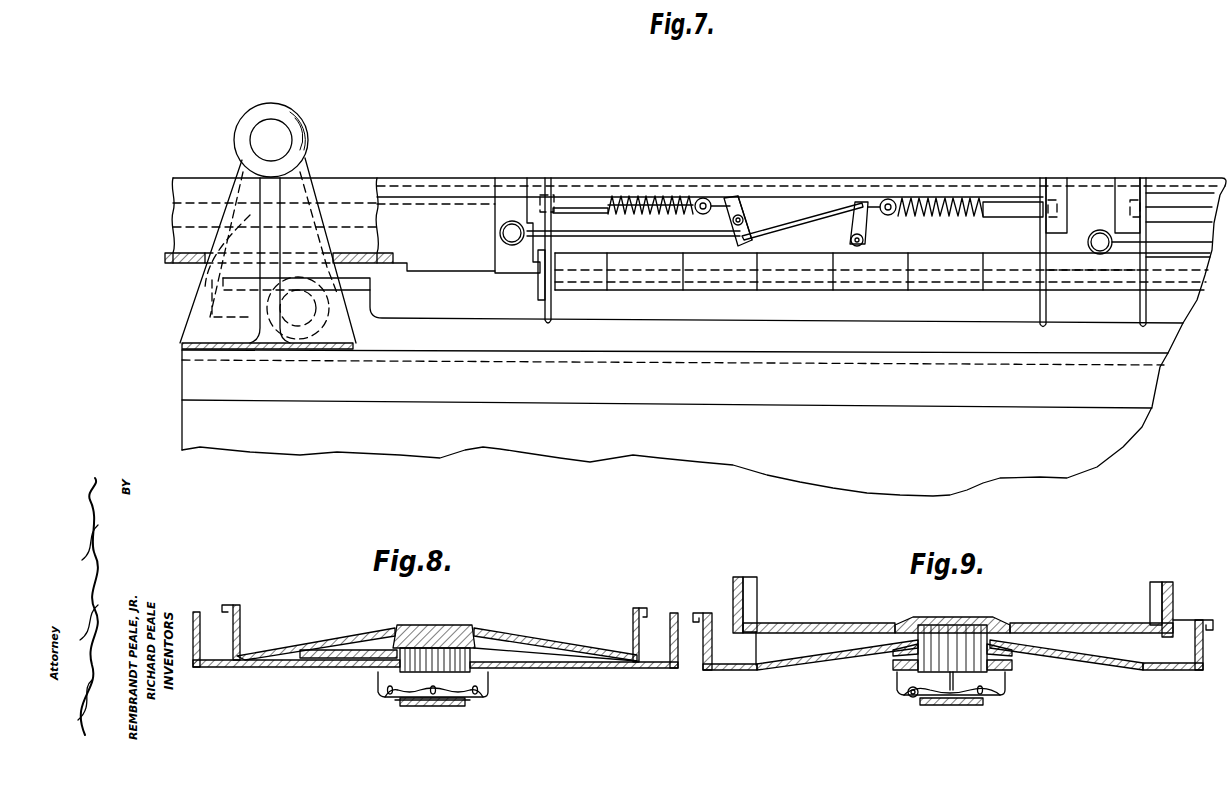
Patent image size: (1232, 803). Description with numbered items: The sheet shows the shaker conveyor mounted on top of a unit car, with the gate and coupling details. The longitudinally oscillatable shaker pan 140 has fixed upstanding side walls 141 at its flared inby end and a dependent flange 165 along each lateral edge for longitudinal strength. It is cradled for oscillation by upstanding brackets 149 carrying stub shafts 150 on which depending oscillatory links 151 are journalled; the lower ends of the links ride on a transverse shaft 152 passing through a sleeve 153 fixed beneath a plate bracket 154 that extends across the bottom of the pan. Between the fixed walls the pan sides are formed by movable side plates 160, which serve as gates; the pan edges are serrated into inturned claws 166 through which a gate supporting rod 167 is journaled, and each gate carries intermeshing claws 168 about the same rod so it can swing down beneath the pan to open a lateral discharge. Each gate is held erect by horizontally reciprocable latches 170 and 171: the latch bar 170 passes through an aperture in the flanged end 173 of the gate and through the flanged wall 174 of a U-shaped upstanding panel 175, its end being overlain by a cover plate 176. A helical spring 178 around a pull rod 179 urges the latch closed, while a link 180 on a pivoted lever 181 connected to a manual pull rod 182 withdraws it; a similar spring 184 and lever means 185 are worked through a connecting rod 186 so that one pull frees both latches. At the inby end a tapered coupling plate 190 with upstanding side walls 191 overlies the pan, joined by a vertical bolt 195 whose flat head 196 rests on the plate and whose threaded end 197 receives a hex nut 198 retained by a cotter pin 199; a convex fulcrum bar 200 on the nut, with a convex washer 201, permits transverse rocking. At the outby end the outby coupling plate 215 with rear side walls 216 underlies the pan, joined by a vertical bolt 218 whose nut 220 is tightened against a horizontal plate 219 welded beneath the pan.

In FIG. 7, the shaker pan 140 is at (353, 215).
In FIG. 8, the shaker pan 140 is at (350, 618).
In FIG. 9, the shaker pan 140 is at (1105, 666).
In FIG. 7, the upstanding side walls 141 is at (438, 197).
In FIG. 8, the upstanding side walls 141 is at (240, 620).
In FIG. 9, the upstanding side walls 141 is at (1205, 675).
In FIG. 7, the upstanding brackets 149 is at (240, 218).
In FIG. 7, the stub shafts 150 is at (265, 130).
In FIG. 7, the oscillatory links 151 is at (322, 215).
In FIG. 7, the transverse shaft 152 is at (215, 337).
In FIG. 7, the sleeve 153 is at (268, 310).
In FIG. 7, the plate bracket 154 is at (223, 289).
In FIG. 7, the movable side plates 160 is at (1175, 233).
In FIG. 7, the dependent flange 165 is at (445, 308).
In FIG. 7, the inturned claws 166 is at (565, 283).
In FIG. 7, the gate supporting rod 167 is at (1070, 284).
In FIG. 7, the intermeshing claws 168 is at (648, 281).
In FIG. 7, the latch bar 170 is at (582, 214).
In FIG. 7, the latch 171 is at (998, 212).
In FIG. 7, the flanged end 173 is at (557, 195).
In FIG. 7, the flanged wall 174 is at (548, 178).
In FIG. 7, the U-shaped upstanding panel 175 is at (508, 185).
In FIG. 7, the cover plate 176 is at (1050, 195).
In FIG. 7, the helical spring 178 is at (640, 200).
In FIG. 7, the pull rod 179 is at (704, 200).
In FIG. 7, the link 180 is at (728, 200).
In FIG. 7, the pivoted lever 181 is at (740, 204).
In FIG. 7, the manual pull rod 182 is at (642, 214).
In FIG. 7, the spring 184 is at (933, 200).
In FIG. 7, the lever means 185 is at (868, 222).
In FIG. 7, the connecting rod 186 is at (798, 222).
In FIG. 9, the coupling plate 190 is at (1075, 605).
In FIG. 9, the upstanding side walls 191 is at (733, 580).
In FIG. 9, the vertical bolt 195 is at (935, 632).
In FIG. 9, the flat head 196 is at (992, 618).
In FIG. 9, the threaded end 197 is at (975, 703).
In FIG. 9, the hex nut 198 is at (981, 690).
In FIG. 9, the cotter pin 199 is at (908, 693).
In FIG. 9, the convex fulcrum bar 200 is at (888, 660).
In FIG. 9, the convex washer 201 is at (1010, 658).
In FIG. 8, the outby coupling plate 215 is at (255, 666).
In FIG. 8, the rear side walls 216 is at (230, 585).
In FIG. 8, the vertical bolt 218 is at (426, 655).
In FIG. 8, the horizontal plate 219 is at (560, 668).
In FIG. 8, the nut 220 is at (486, 692).